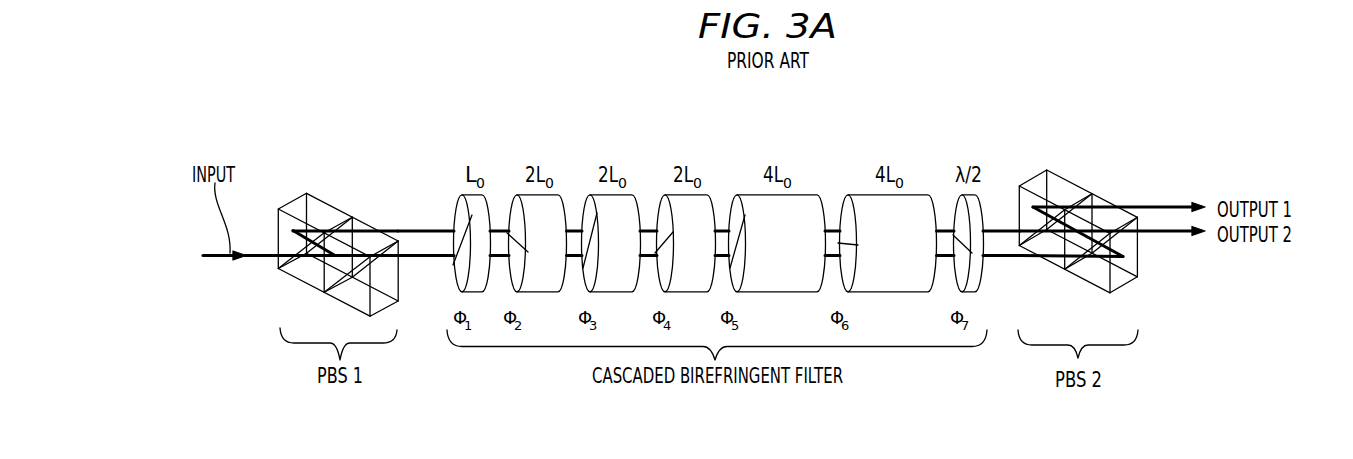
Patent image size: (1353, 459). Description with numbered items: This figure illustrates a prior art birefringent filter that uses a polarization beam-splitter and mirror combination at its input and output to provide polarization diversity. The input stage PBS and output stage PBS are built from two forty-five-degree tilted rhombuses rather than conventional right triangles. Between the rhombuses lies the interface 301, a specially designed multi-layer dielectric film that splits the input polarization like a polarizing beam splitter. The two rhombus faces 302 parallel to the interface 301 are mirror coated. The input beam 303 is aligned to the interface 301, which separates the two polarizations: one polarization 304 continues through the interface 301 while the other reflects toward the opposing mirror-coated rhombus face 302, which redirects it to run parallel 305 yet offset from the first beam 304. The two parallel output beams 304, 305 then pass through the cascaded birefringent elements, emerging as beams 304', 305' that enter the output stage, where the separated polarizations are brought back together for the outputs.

The polarization beam splitter PBS 1 301 is at (337, 223).
The birefringent prism element of PBS 1 302 is at (294, 199).
The input beam 303 is at (260, 263).
The lower polarized beam 304 is at (426, 283).
The upper polarized beam 305 is at (426, 196).
The lower polarized beam exiting filter 304' is at (1002, 285).
The upper polarized beam exiting filter 305' is at (1004, 180).